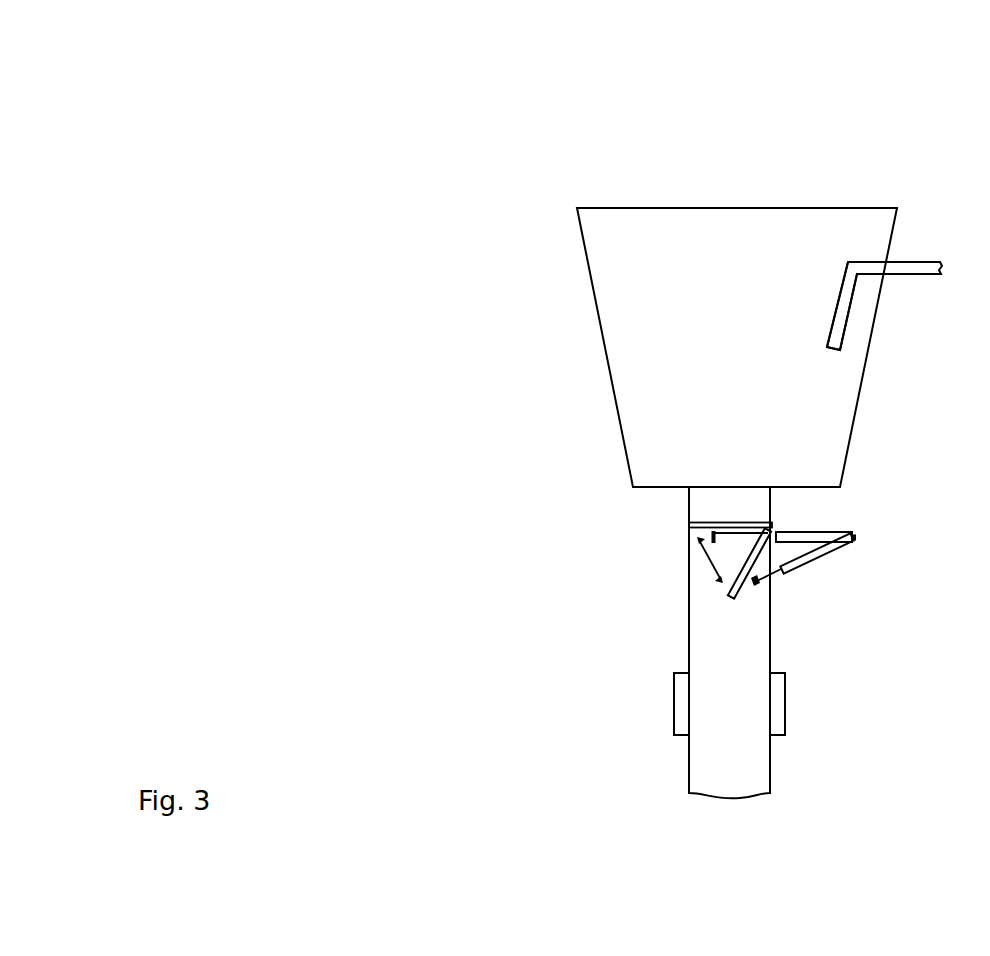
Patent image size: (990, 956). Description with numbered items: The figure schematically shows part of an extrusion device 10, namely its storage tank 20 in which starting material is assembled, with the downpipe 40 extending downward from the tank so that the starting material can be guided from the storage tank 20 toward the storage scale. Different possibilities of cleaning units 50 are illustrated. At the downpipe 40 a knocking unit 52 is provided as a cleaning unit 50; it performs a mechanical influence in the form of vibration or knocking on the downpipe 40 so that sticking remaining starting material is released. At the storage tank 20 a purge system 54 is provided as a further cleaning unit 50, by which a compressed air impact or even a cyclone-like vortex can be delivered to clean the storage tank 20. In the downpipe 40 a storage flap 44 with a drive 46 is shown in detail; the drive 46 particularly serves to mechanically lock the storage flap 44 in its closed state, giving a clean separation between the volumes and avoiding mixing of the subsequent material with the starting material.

The extrusion device 10 is at (567, 128).
The storage tank 20 is at (709, 212).
The downpipe 40 is at (688, 614).
The storage flap 44 is at (689, 528).
The drive 46 is at (824, 532).
The cleaning unit 50 is at (798, 707).
The knocking unit 52 is at (785, 681).
The purge system 54 is at (845, 319).